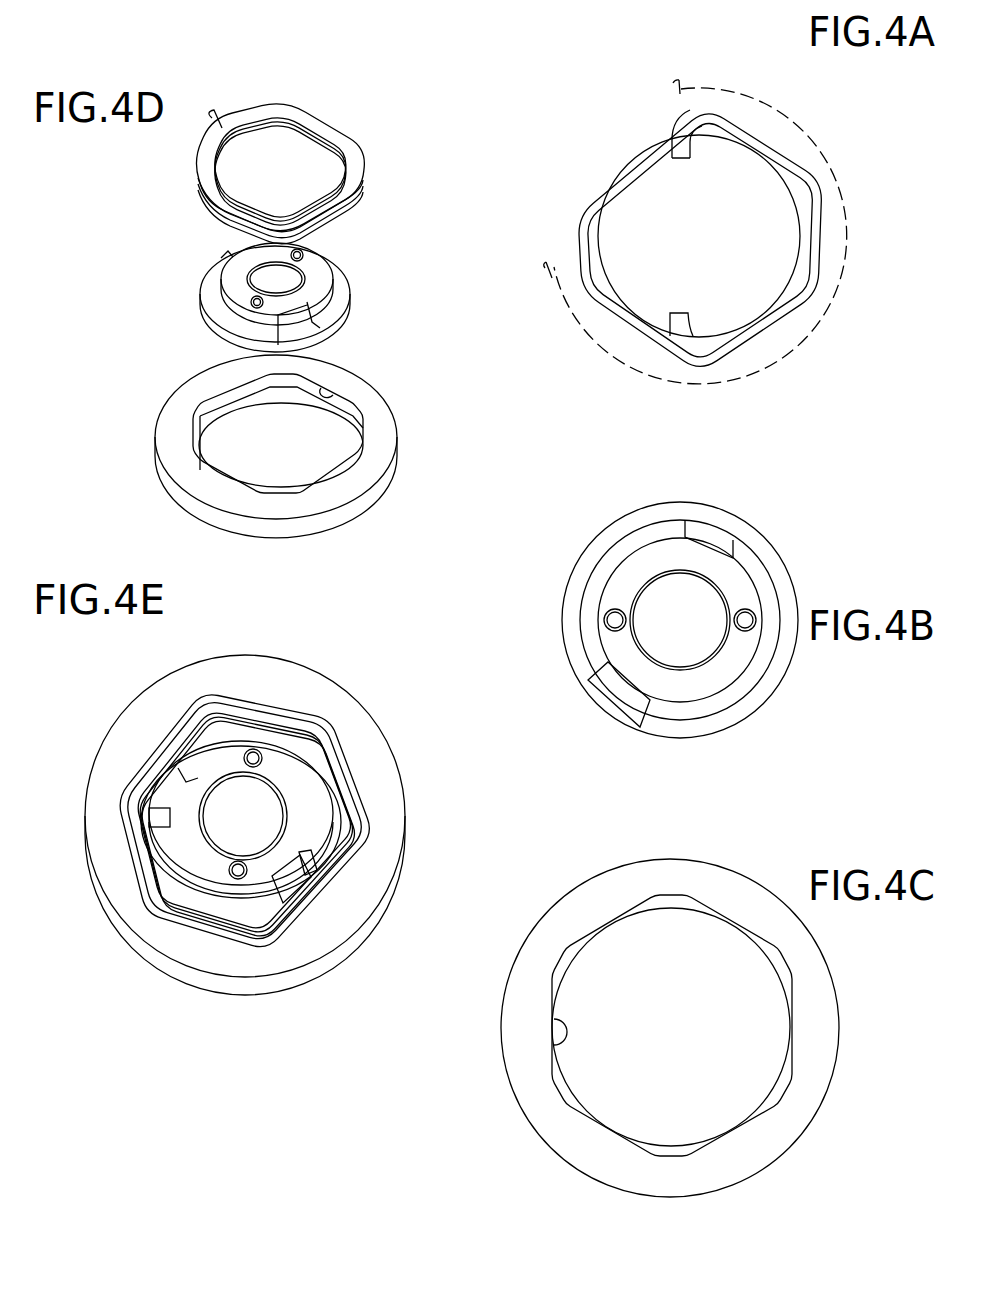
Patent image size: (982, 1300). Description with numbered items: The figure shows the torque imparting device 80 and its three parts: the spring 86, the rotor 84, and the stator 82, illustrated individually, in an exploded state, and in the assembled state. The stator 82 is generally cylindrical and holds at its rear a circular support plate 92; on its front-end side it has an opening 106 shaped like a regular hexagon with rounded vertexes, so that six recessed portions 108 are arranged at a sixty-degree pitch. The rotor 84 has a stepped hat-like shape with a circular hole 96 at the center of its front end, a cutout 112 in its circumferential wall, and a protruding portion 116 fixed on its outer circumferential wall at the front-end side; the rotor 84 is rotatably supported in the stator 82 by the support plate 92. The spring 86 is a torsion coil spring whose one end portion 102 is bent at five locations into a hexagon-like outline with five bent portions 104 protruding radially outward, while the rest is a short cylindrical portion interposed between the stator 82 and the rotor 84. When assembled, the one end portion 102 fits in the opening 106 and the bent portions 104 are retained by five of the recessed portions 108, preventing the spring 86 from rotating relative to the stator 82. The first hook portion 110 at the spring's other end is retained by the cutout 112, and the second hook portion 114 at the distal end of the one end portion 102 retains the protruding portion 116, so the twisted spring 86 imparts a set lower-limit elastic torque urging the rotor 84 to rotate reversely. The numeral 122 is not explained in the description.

In FIG. 4E, the torque imparting device 80 is at (248, 843).
In FIG. 4C, the stator 82 is at (838, 844).
In FIG. 4D, the stator 82 is at (393, 521).
In FIG. 4E, the stator 82 is at (113, 944).
In FIG. 4B, the rotor 84 is at (810, 508).
In FIG. 4D, the rotor 84 is at (397, 301).
In FIG. 4E, the rotor 84 is at (318, 792).
In FIG. 4A, the spring 86 is at (808, 96).
In FIG. 4D, the spring 86 is at (395, 167).
In FIG. 4E, the spring 86 is at (285, 696).
In FIG. 4C, the support plate 92 is at (721, 1110).
In FIG. 4D, the support plate 92 is at (220, 464).
In FIG. 4B, the circular hole 96 is at (700, 657).
In FIG. 4A, the one end portion 102 is at (814, 279).
In FIG. 4A, the bent portions 104 is at (709, 92).
In FIG. 4D, the bent portions 104 is at (302, 90).
In FIG. 4E, the bent portions 104 is at (217, 706).
In FIG. 4C, the opening 106 is at (561, 1022).
In FIG. 4D, the opening 106 is at (328, 392).
In FIG. 4C, the recessed portions 108 is at (664, 883).
In FIG. 4D, the recessed portions 108 is at (197, 390).
In FIG. 4E, the recessed portions 108 is at (220, 688).
In FIG. 4A, the first hook portion 110 is at (675, 322).
In FIG. 4E, the first hook portion 110 is at (310, 872).
In FIG. 4B, the cutout 112 is at (615, 693).
In FIG. 4E, the cutout 112 is at (296, 890).
In FIG. 4A, the second hook portion 114 is at (668, 146).
In FIG. 4E, the second hook portion 114 is at (156, 813).
In FIG. 4B, the protruding portion 116 is at (707, 535).
In FIG. 4E, the protruding portion 116 is at (176, 780).
In FIG. 4B, the annular surface 122 is at (623, 572).